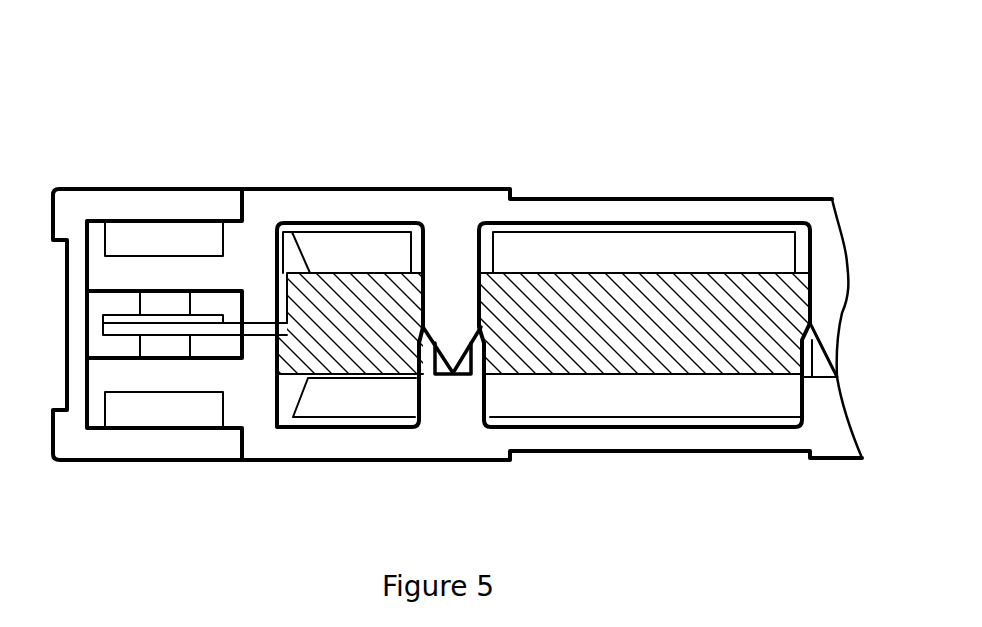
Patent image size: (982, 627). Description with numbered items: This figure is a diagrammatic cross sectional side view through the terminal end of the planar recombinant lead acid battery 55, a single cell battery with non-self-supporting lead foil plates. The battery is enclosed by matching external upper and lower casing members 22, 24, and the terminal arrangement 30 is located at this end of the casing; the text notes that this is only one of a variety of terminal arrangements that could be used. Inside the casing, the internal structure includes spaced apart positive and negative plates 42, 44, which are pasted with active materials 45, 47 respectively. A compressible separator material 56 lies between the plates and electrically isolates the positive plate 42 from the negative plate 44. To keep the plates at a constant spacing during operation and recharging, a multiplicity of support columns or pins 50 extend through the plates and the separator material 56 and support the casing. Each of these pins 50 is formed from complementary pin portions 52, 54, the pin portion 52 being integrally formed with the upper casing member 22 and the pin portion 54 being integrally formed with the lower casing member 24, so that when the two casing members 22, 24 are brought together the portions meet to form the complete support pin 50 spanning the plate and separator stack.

The upper casing member 22 is at (753, 212).
The lower casing member 24 is at (732, 437).
The terminal arrangement 30 is at (166, 298).
The positive plate 42 is at (302, 225).
The negative plate 44 is at (552, 423).
The active material 45 is at (360, 250).
The active material 47 is at (633, 398).
The support column or pin 50 is at (459, 298).
The pin portion 52 is at (443, 275).
The pin portion 54 is at (443, 402).
The planar recombinant lead acid battery 55 is at (596, 121).
The compressible separator material 56 is at (660, 290).